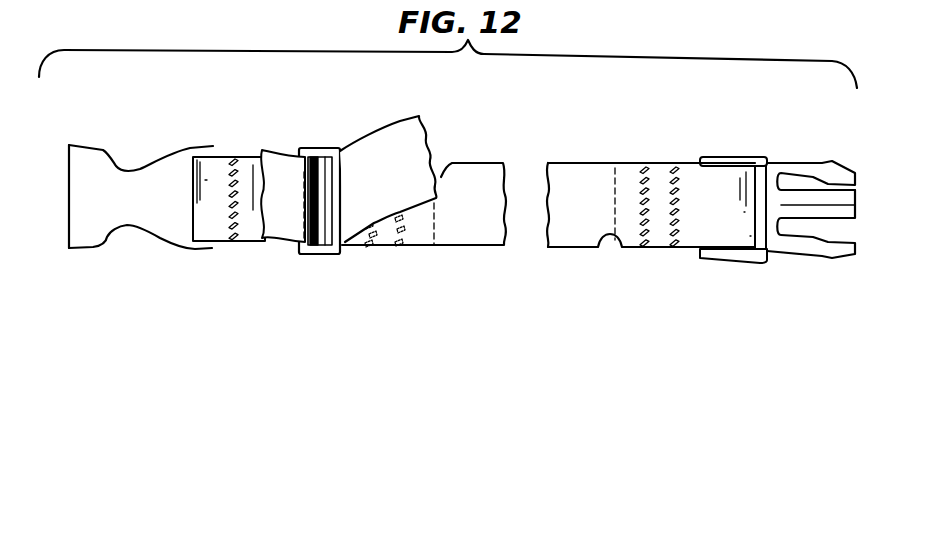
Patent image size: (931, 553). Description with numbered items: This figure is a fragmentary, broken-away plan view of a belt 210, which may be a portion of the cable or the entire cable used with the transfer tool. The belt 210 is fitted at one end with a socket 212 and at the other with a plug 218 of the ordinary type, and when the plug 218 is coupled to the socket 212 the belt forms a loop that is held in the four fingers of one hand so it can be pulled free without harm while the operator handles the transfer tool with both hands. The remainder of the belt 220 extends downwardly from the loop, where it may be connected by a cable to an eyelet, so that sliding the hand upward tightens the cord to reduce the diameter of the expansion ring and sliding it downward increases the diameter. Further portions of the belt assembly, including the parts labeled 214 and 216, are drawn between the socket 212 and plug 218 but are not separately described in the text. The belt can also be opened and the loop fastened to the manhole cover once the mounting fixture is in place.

The belt 210 is at (582, 94).
The socket 212 is at (124, 205).
The buckle slider 214 is at (307, 253).
The strap 216 is at (572, 233).
The plug 218 is at (817, 262).
The remainder of the belt 220 is at (277, 165).